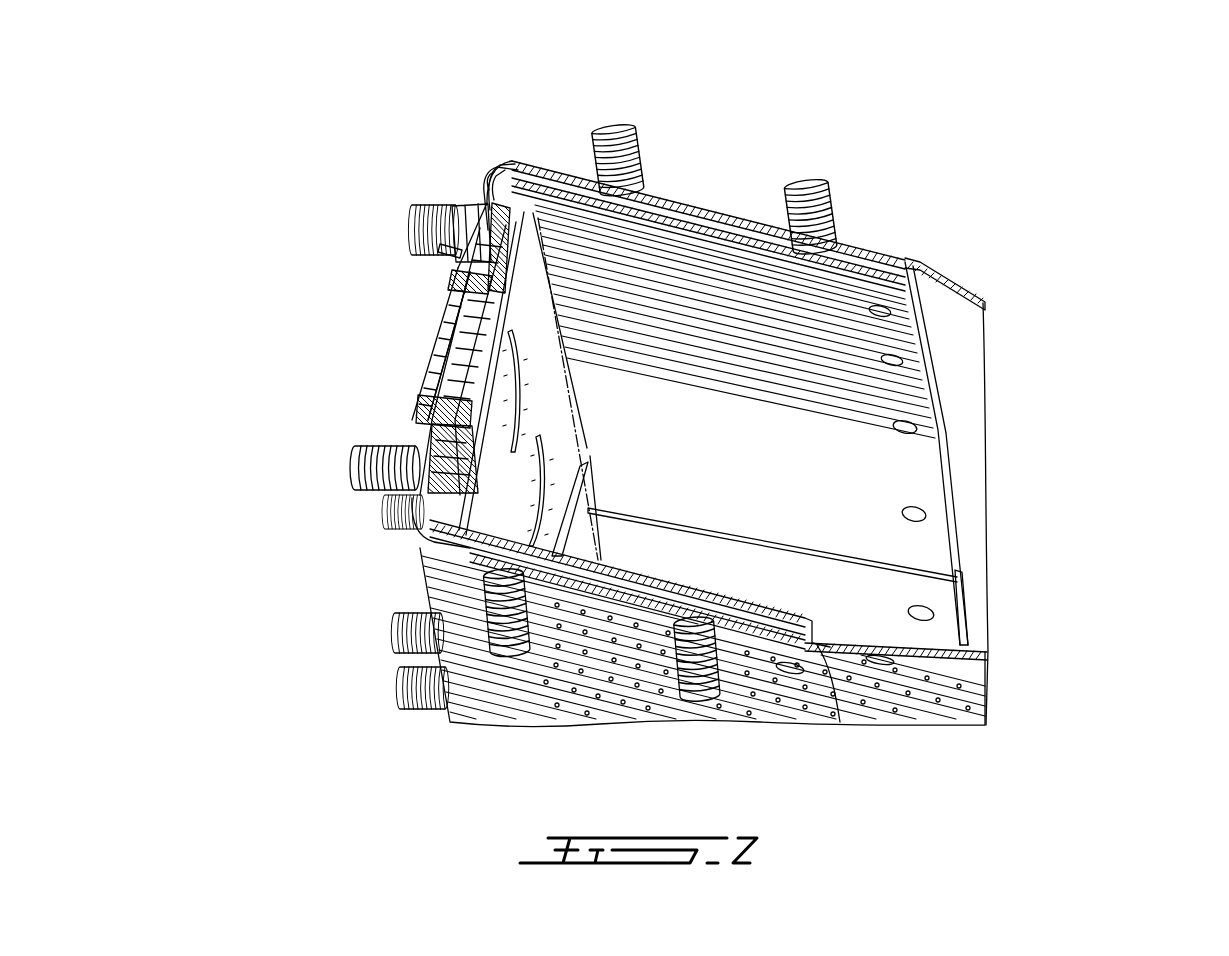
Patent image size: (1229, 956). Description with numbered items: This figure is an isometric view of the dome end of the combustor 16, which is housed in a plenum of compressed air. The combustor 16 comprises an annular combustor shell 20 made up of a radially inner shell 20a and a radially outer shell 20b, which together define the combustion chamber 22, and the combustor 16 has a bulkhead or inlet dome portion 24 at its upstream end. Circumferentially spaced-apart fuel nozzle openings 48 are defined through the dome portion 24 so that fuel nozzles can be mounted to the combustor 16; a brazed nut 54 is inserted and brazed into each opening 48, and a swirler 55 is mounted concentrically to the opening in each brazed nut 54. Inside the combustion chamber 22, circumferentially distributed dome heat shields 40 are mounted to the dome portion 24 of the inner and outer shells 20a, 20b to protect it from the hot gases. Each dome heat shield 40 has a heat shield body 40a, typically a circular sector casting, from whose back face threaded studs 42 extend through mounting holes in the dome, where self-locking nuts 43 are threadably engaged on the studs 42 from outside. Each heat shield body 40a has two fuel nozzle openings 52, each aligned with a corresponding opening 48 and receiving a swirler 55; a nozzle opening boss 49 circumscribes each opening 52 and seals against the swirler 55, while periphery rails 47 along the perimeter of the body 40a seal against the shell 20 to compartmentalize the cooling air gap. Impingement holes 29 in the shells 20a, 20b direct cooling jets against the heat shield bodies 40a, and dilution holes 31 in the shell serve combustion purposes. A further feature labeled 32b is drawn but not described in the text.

The combustor 16 is at (772, 148).
The annular combustor shell 20 is at (912, 263).
The radially inner shell 20a is at (398, 540).
The radially outer shell 20b is at (513, 164).
The combustion chamber 22 is at (848, 468).
The dome portion 24 is at (324, 481).
The impingement holes 29 is at (547, 688).
The dilution holes 31 is at (860, 255).
The bracket flange 32b is at (962, 610).
The dome heat shields 40 is at (482, 213).
The heat shield body 40a is at (585, 490).
The threaded studs 42 is at (417, 226).
The self-locking nuts 43 is at (440, 247).
The periphery rails 47 is at (493, 185).
The fuel nozzle openings 48 is at (440, 413).
The nozzle opening boss 49 is at (455, 292).
The fuel nozzle opening 52 is at (527, 455).
The brazed nut 54 is at (455, 278).
The swirler 55 is at (430, 398).